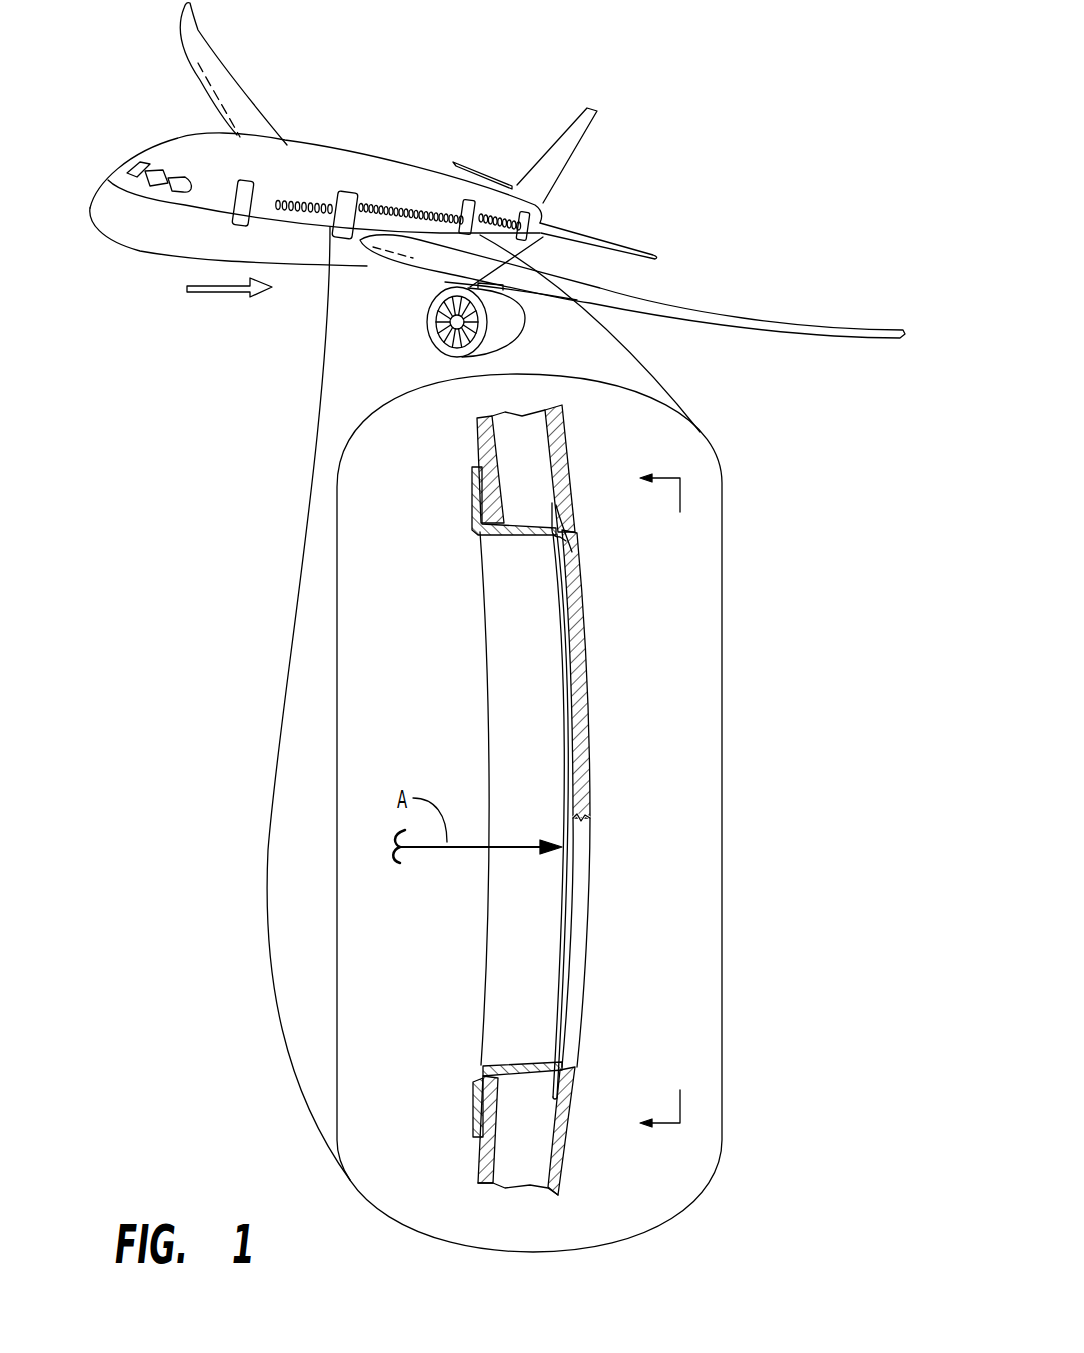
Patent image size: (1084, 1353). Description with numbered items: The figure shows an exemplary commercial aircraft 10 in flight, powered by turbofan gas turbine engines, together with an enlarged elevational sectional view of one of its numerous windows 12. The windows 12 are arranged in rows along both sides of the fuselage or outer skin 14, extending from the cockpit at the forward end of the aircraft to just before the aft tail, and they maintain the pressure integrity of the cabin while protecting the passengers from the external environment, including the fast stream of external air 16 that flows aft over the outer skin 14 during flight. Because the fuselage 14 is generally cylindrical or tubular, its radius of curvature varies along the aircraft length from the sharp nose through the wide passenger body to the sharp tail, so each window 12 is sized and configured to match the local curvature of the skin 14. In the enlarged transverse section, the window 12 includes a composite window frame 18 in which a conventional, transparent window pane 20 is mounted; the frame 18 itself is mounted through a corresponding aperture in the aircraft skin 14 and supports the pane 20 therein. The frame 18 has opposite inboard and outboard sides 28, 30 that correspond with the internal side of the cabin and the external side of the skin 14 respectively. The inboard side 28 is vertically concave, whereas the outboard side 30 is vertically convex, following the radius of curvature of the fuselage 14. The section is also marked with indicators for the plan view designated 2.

The aircraft 10 is at (329, 148).
The window 12 is at (476, 656).
The fuselage or outer skin 14 is at (435, 202).
The external air 16 is at (218, 296).
The composite window frame 18 is at (552, 1035).
The window pane 20 is at (583, 660).
The inboard side 28 is at (558, 932).
The outboard side 30 is at (583, 938).
The section line for FIG. 2 is at (660, 800).